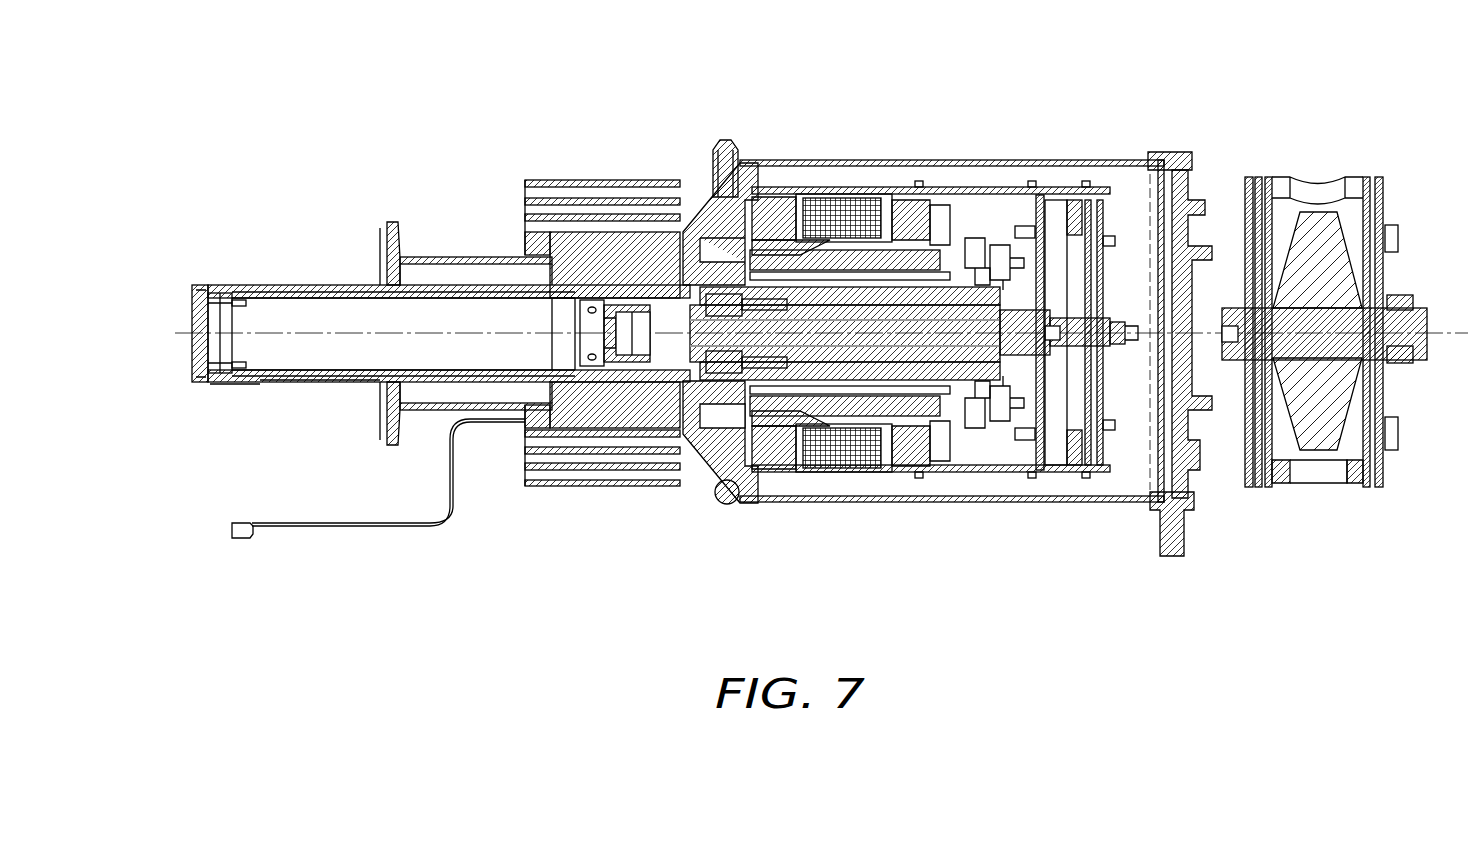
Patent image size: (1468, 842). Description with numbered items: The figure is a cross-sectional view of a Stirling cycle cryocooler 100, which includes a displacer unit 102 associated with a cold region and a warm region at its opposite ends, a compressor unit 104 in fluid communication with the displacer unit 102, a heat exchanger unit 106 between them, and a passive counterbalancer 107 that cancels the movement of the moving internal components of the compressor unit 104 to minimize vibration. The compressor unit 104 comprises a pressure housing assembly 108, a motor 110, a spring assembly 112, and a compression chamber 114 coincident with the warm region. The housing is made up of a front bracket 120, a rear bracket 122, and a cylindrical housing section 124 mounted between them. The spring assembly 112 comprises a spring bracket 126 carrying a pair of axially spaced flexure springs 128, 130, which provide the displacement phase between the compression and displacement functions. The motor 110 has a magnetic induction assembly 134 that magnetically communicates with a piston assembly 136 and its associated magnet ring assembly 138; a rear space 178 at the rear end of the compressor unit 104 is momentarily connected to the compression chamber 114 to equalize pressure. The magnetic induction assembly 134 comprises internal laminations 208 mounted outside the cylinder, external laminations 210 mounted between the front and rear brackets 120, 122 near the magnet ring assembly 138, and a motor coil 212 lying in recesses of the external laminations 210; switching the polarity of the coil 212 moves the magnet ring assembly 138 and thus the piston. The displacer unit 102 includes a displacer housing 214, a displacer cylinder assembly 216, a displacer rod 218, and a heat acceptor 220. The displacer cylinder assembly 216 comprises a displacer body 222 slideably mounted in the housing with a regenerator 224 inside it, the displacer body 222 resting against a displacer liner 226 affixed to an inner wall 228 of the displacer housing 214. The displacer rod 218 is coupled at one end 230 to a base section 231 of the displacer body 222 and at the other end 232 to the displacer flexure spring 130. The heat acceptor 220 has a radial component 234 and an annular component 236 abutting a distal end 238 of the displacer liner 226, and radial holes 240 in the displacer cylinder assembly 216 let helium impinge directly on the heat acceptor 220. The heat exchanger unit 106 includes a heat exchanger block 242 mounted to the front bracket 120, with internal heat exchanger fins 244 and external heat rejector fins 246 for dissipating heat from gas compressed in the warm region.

The Stirling cycle cryocooler 100 is at (700, 72).
The displacer unit 102 is at (326, 248).
The compressor unit 104 is at (964, 145).
The heat exchanger unit 106 is at (602, 285).
The passive counterbalancer 107 is at (1311, 165).
The pressure housing assembly 108 is at (856, 142).
The motor 110 is at (980, 212).
The spring assembly 112 is at (1083, 165).
The compression chamber 114 is at (701, 382).
The front bracket 120 is at (746, 195).
The rear bracket 122 is at (1182, 178).
The cylindrical housing section 124 is at (851, 186).
The spring bracket 126 is at (1075, 458).
The flexure spring 128 is at (1030, 458).
The displacer flexure spring 130 is at (1100, 470).
The magnetic induction assembly 134 is at (810, 188).
The piston assembly 136 is at (958, 224).
The magnet ring assembly 138 is at (957, 440).
The rear space 178 is at (996, 462).
The internal laminations 208 is at (884, 412).
The external laminations 210 is at (800, 408).
The motor coil 212 is at (846, 470).
The displacer housing 214 is at (258, 388).
The displacer cylinder assembly 216 is at (377, 376).
The displacer rod 218 is at (668, 272).
The heat acceptor 220 is at (192, 362).
The displacer body 222 is at (356, 300).
The regenerator 224 is at (291, 322).
The displacer liner 226 is at (336, 378).
The inner wall 228 is at (289, 386).
The one end 230 is at (633, 356).
The base section 231 is at (612, 376).
The other end 232 is at (1065, 320).
The radial component 234 is at (192, 318).
The annular component 236 is at (240, 382).
The distal end 238 is at (252, 290).
The radial holes 240 is at (205, 347).
The heat exchanger block 242 is at (545, 238).
The internal heat exchanger fins 244 is at (600, 393).
The external heat rejector fins 246 is at (547, 183).